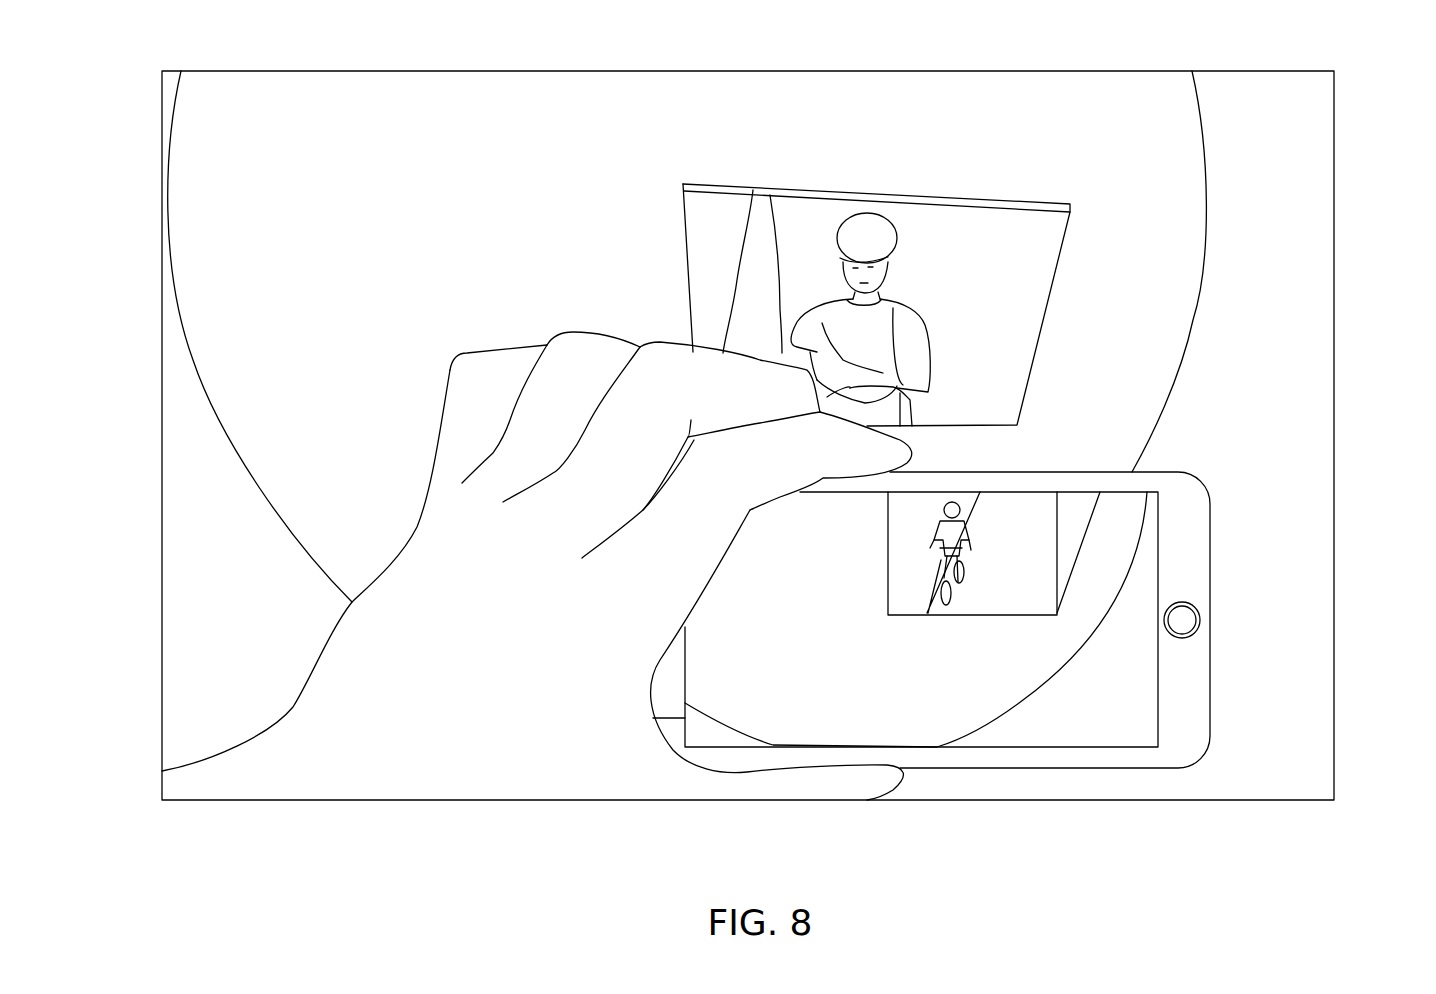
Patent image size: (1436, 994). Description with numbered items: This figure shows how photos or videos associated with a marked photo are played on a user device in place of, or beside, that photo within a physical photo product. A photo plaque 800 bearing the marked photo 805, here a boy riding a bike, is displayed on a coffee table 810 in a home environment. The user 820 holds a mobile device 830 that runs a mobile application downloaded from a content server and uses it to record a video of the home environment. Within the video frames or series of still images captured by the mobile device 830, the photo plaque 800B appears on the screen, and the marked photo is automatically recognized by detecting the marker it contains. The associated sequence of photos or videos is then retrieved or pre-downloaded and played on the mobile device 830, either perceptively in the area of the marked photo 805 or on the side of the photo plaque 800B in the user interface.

The photo plaque 800 is at (803, 223).
The marked photo 805 is at (1023, 308).
The coffee table 810 is at (1115, 138).
The user 820 is at (323, 695).
The mobile device 830 is at (1213, 673).
The photo plaque captured in video frames 800B is at (1007, 555).